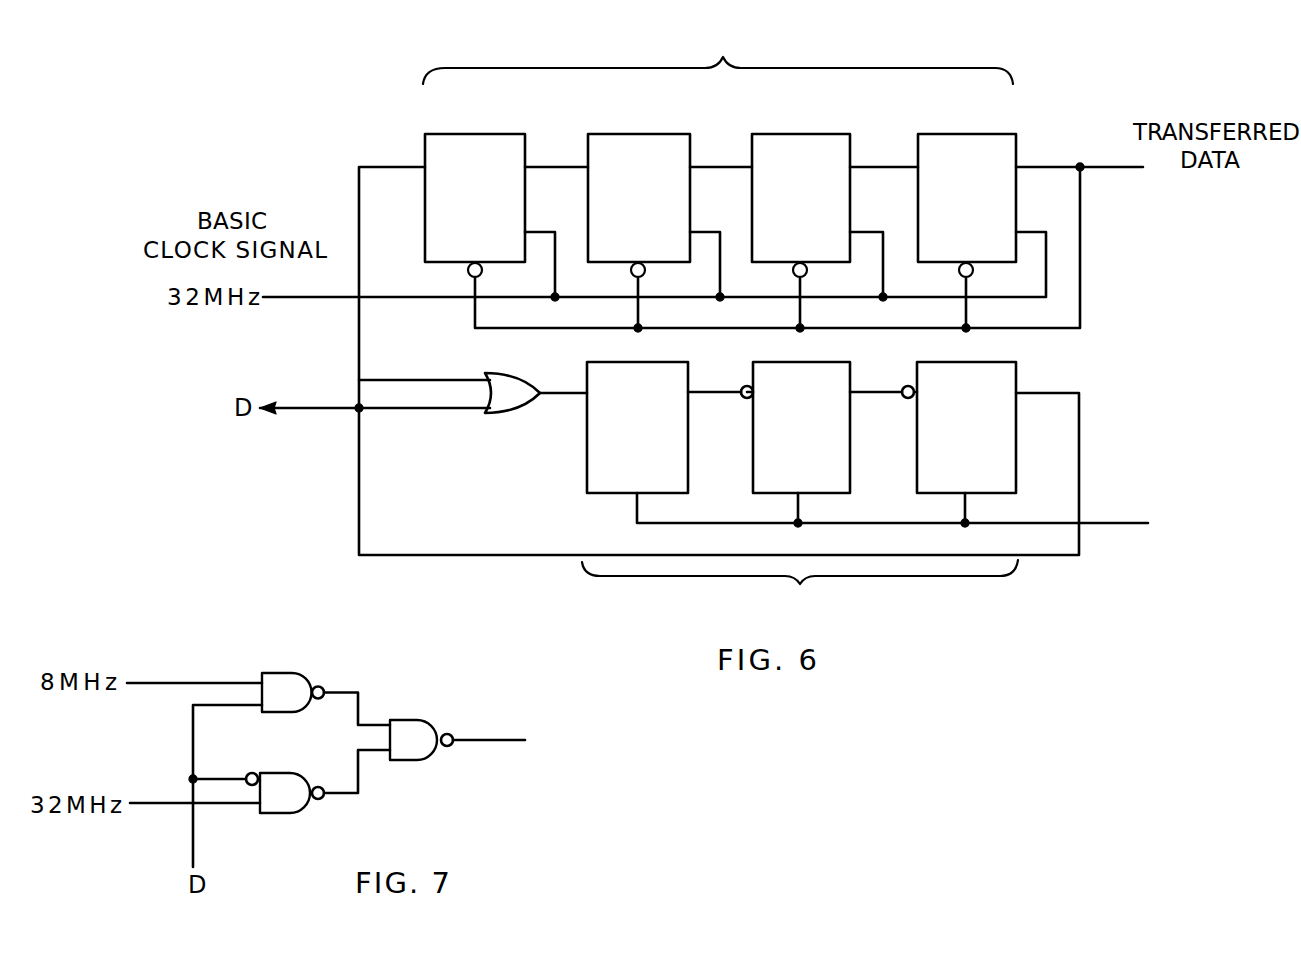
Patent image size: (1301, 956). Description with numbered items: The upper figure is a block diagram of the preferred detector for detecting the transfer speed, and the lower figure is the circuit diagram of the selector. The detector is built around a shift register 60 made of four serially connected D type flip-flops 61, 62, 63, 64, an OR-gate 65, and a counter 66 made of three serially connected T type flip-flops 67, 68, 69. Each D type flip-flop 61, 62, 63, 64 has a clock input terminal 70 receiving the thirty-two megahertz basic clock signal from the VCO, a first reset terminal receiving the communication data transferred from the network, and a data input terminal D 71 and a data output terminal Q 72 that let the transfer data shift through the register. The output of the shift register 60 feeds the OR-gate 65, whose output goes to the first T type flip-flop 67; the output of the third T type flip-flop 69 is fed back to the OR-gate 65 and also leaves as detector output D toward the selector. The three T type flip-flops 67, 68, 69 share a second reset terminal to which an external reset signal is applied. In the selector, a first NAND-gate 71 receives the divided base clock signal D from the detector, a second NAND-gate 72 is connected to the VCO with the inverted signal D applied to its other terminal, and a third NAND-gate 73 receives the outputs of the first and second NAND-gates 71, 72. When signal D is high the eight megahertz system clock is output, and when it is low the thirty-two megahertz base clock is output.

In FIG. 6, the shift register 60 is at (718, 57).
In FIG. 6, the D type flip-flop 61 is at (967, 146).
In FIG. 6, the D type flip-flop 62 is at (806, 146).
In FIG. 6, the D type flip-flop 63 is at (638, 146).
In FIG. 6, the D type flip-flop 64 is at (478, 146).
In FIG. 6, the OR-gate 65 is at (423, 407).
In FIG. 6, the counter 66 is at (800, 583).
In FIG. 6, the first T type flip-flop 67 is at (680, 444).
In FIG. 6, the second T type flip-flop 68 is at (840, 440).
In FIG. 6, the third T type flip-flop 69 is at (1000, 440).
In FIG. 6, the clock input terminal 70 is at (525, 233).
In FIG. 6, the data input terminal D / first NAND-gate 71 is at (527, 167).
In FIG. 7, the data input terminal D / first NAND-gate 71 is at (294, 689).
In FIG. 6, the data output terminal Q / second NAND-gate 72 is at (425, 167).
In FIG. 7, the data output terminal Q / second NAND-gate 72 is at (290, 795).
In FIG. 7, the third NAND-gate 73 is at (416, 745).